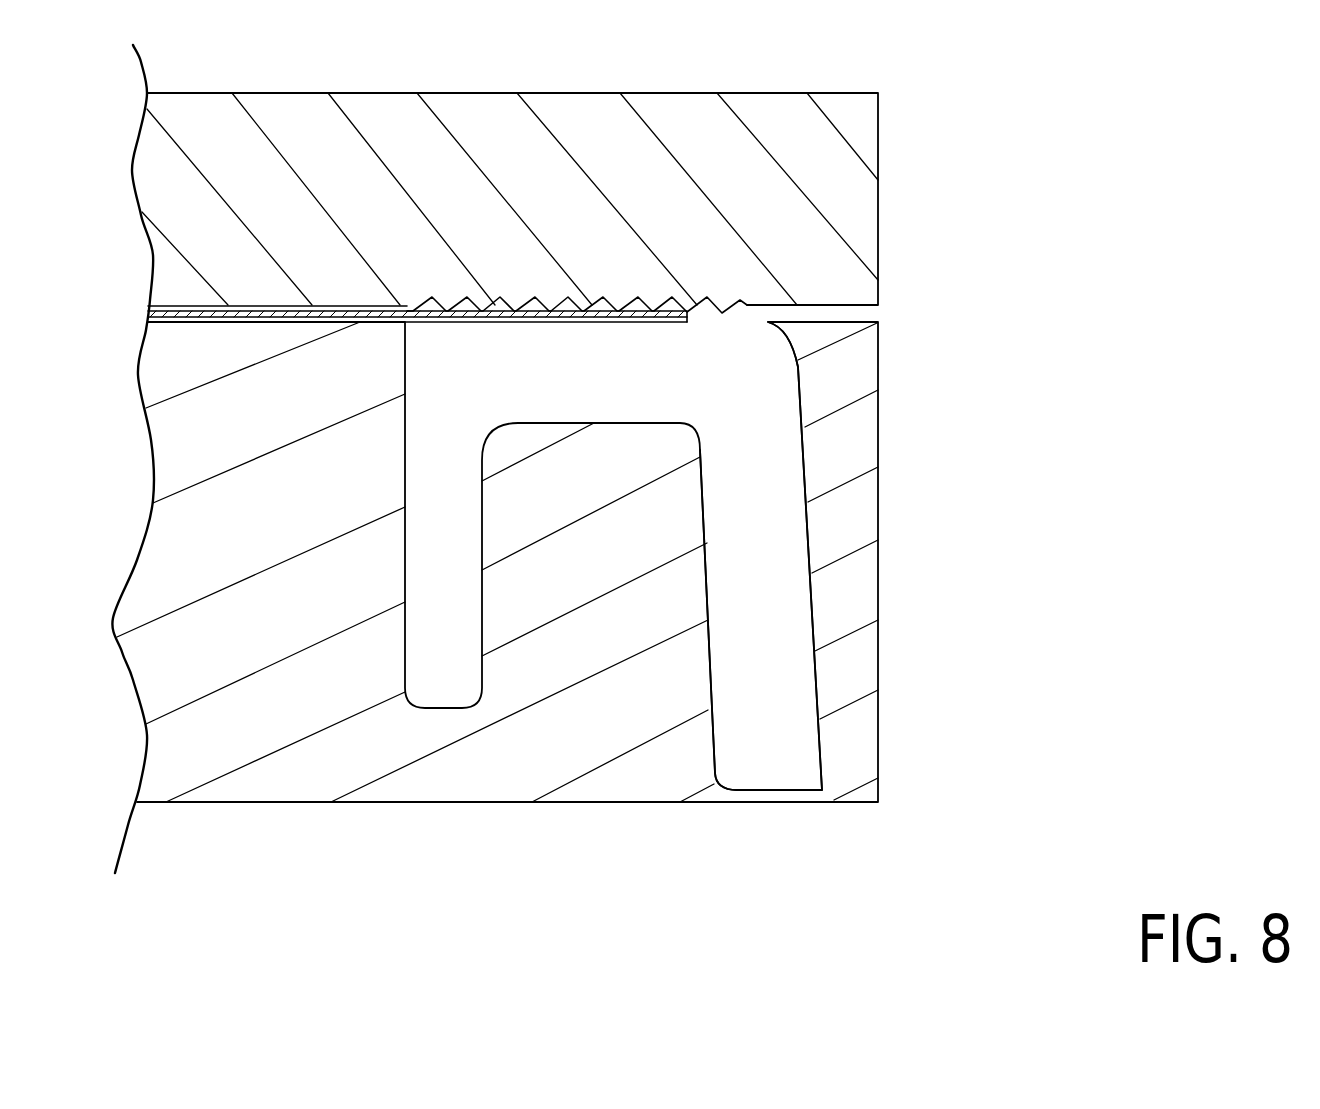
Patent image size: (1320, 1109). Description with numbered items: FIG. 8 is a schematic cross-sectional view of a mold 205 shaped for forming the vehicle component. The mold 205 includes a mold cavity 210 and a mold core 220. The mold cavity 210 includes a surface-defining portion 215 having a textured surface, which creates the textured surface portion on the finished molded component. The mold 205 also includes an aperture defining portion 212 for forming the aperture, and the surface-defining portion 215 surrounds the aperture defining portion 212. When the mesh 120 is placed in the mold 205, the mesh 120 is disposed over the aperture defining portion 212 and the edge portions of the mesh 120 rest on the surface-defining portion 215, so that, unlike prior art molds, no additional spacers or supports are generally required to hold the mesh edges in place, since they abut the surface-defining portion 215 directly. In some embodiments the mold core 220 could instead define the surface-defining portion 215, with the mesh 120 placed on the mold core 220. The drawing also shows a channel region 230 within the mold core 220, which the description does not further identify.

The mold 205 is at (1157, 187).
The mold cavity 210 is at (878, 258).
The mold core 220 is at (876, 352).
The aperture defining portion 212 is at (297, 303).
The surface-defining portion 215 is at (718, 288).
The mesh 120 is at (667, 328).
The channel 230 is at (772, 618).